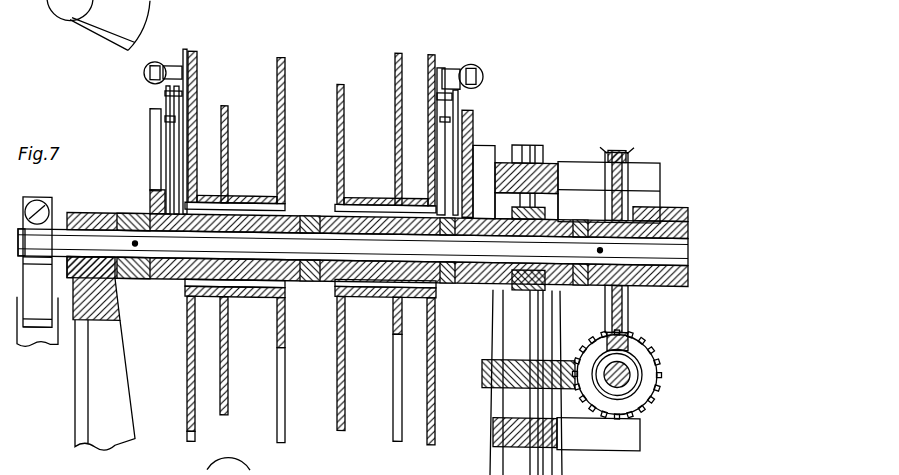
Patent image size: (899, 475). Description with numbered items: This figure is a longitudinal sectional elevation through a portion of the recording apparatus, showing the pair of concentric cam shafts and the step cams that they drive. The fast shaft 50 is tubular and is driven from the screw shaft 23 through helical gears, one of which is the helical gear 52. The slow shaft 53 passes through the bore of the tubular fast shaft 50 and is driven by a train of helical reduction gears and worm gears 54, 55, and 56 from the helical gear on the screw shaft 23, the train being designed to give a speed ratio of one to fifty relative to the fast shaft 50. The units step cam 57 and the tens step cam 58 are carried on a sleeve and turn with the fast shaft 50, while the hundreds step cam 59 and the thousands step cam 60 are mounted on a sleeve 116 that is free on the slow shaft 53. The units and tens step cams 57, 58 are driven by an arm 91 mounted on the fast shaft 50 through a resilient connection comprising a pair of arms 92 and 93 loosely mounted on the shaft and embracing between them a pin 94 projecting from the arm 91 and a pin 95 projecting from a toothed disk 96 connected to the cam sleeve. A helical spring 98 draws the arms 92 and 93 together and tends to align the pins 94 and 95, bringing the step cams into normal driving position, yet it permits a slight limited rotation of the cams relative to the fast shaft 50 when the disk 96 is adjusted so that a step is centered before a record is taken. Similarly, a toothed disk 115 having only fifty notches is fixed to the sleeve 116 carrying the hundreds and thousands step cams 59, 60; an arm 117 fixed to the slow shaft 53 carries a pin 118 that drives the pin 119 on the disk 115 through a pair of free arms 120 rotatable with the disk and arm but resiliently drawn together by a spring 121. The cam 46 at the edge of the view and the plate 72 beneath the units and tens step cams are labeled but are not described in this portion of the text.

The screw shaft 23 is at (553, 470).
The cam 46 is at (38, 6).
The fast shaft 50 is at (483, 213).
The helical gear 52 is at (510, 279).
The slow shaft 53 is at (688, 238).
The helical reduction gear 54 is at (655, 367).
The helical reduction gear 55 is at (637, 354).
The worm gear 56 is at (625, 305).
The units step cam 57 is at (400, 48).
The tens step cam 58 is at (340, 80).
The hundreds step cam 59 is at (283, 56).
The thousands step cam 60 is at (226, 106).
The plate 72 is at (365, 208).
The arm 91 is at (477, 133).
The arm 92 is at (462, 134).
The arm 93 is at (443, 153).
The pin 94 is at (458, 132).
The pin 95 is at (434, 82).
The toothed disk 96 is at (429, 90).
The helical spring 98 is at (476, 66).
The toothed disk 115 is at (198, 76).
The sleeve 116 is at (258, 206).
The arm 117 is at (152, 210).
The pin 118 is at (165, 103).
The pin 119 is at (185, 55).
The free arms 120 is at (178, 172).
The spring 121 is at (144, 73).